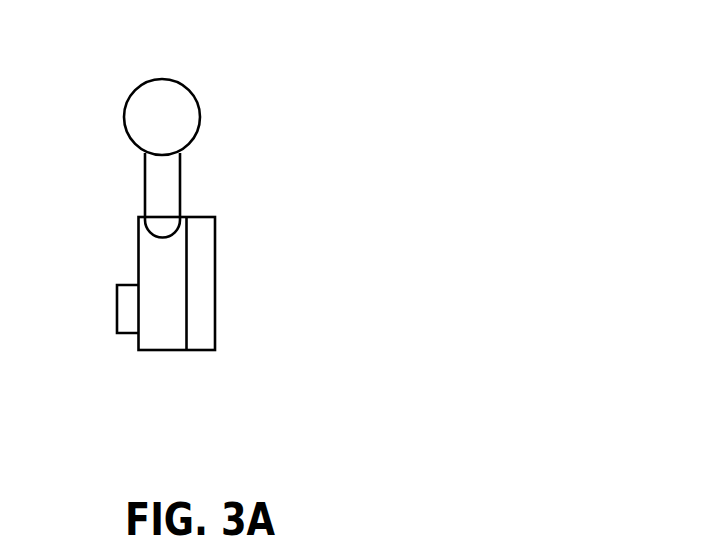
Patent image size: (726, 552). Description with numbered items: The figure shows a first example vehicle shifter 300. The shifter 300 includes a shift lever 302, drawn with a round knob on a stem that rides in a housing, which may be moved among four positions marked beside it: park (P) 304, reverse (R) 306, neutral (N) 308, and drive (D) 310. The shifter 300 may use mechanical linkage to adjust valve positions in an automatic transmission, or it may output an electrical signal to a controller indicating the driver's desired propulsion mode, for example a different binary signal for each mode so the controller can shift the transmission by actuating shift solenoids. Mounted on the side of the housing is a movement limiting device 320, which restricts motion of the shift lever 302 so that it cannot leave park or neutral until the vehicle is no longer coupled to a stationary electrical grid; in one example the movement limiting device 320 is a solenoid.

The shifter 300 is at (482, 62).
The shift lever 302 is at (185, 82).
The park (P) 304 is at (215, 233).
The reverse (R) 306 is at (215, 267).
The neutral (N) 308 is at (215, 305).
The drive (D) 310 is at (215, 337).
The movement limiting device 320 is at (123, 317).